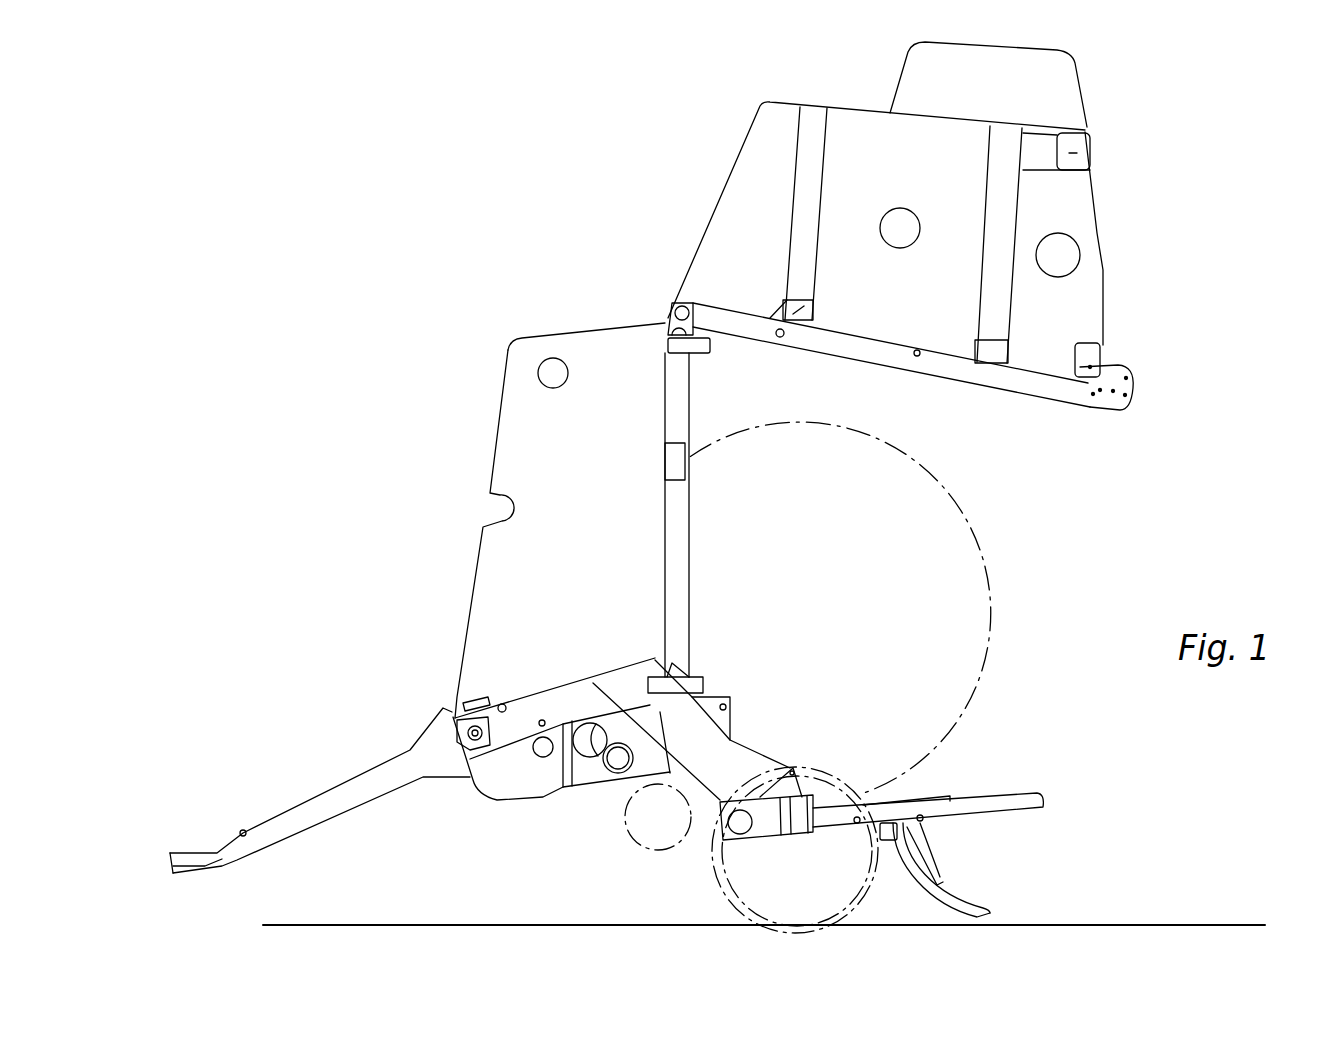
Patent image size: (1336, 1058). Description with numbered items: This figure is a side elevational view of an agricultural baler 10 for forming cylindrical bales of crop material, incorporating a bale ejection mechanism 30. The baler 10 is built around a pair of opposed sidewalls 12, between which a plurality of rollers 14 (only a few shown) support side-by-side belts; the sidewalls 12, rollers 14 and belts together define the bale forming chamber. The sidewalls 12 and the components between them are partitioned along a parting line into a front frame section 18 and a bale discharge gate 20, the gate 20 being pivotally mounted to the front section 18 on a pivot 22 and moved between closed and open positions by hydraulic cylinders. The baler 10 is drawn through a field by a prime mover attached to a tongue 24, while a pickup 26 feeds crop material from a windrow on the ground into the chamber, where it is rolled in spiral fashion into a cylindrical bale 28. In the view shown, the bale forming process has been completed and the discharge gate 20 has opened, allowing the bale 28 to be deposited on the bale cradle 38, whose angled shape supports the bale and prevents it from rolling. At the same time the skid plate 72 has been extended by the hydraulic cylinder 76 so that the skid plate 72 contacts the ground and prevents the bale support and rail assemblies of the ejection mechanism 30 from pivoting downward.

The baler 10 is at (447, 304).
The sidewalls 12 is at (600, 530).
The rollers 14 is at (555, 372).
The front frame section 18 is at (470, 613).
The bale discharge gate 20 is at (1093, 205).
The pivot 22 is at (667, 318).
The tongue 24 is at (310, 803).
The pickup 26 is at (638, 827).
The cylindrical bale 28 is at (824, 613).
The bale ejection mechanism 30 is at (983, 760).
The bale cradle 38 is at (923, 805).
The skid plate 72 is at (963, 903).
The hydraulic cylinder 76 is at (930, 847).